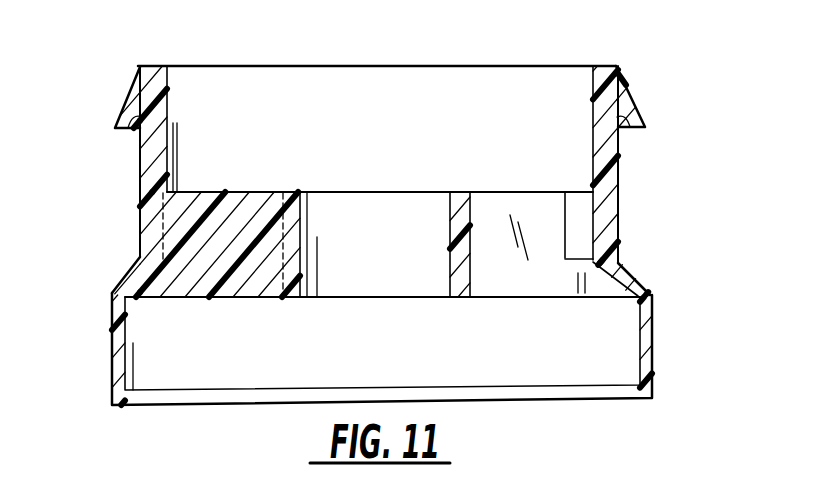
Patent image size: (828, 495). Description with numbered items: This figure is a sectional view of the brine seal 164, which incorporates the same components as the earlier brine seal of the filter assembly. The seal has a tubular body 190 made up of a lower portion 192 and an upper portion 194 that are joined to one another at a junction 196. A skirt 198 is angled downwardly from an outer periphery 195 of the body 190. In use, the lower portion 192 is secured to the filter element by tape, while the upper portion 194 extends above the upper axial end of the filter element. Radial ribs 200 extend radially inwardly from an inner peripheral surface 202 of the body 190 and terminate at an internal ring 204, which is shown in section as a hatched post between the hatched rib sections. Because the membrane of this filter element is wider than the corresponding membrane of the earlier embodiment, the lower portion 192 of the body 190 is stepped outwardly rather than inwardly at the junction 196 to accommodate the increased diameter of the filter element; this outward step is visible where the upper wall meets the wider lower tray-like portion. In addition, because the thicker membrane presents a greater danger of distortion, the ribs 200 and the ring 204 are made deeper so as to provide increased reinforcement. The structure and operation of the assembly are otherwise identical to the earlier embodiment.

The brine seal 164 is at (630, 163).
The tubular body 190 is at (139, 182).
The lower portion 192 is at (112, 350).
The upper portion 194 is at (138, 70).
The outer periphery 195 is at (140, 227).
The junction 196 is at (633, 280).
The skirt 198 is at (633, 110).
The radial ribs 200 is at (203, 193).
The inner peripheral surface 202 is at (170, 78).
The internal ring 204 is at (453, 192).